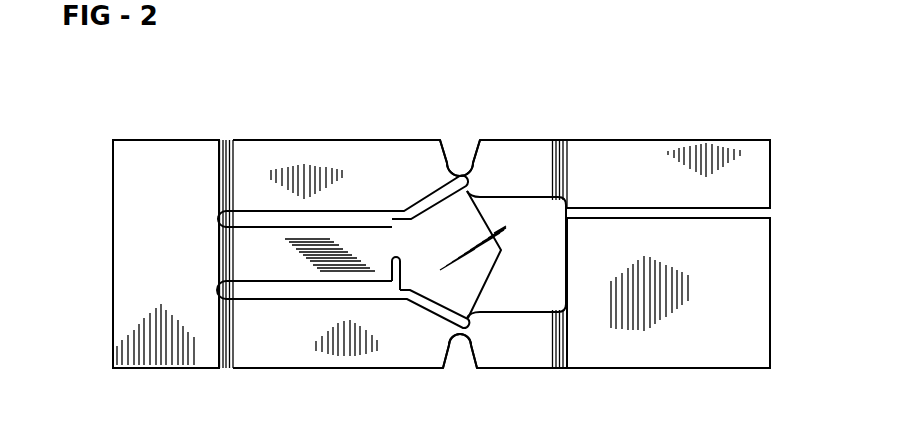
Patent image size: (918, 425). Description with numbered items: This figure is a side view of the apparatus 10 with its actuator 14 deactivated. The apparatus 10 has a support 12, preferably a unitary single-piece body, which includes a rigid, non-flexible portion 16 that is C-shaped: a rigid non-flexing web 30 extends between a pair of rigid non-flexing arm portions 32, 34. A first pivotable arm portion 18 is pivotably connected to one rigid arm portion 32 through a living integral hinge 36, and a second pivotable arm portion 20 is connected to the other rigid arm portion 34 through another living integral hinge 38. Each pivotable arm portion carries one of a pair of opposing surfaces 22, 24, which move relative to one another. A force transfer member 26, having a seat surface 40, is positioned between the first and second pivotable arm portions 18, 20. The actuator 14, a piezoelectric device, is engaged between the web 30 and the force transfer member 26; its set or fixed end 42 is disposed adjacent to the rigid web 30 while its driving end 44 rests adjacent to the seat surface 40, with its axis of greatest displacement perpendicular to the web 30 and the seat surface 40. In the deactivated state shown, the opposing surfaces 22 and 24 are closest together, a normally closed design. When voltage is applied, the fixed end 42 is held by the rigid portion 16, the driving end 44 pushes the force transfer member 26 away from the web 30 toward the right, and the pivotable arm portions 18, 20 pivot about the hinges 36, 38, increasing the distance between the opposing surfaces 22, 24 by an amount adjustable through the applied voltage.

The apparatus 10 is at (387, 86).
The support 12 is at (214, 120).
The actuator 14 is at (275, 272).
The rigid, non-flexible portion 16 is at (92, 160).
The first pivotable arm portion 18 is at (535, 152).
The second pivotable arm portion 20 is at (522, 354).
The opposing surface 22 is at (646, 213).
The opposing surface 24 is at (690, 212).
The force transfer member 26 is at (501, 250).
The rigid non-flexing web 30 is at (125, 274).
The rigid non-flexing arm portion 32 is at (284, 150).
The rigid non-flexing arm portion 34 is at (298, 360).
The living integral hinge 36 is at (452, 153).
The living integral hinge 38 is at (469, 350).
The seat surface 40 is at (388, 227).
The set or fixed end 42 is at (219, 252).
The driving end 44 is at (388, 227).